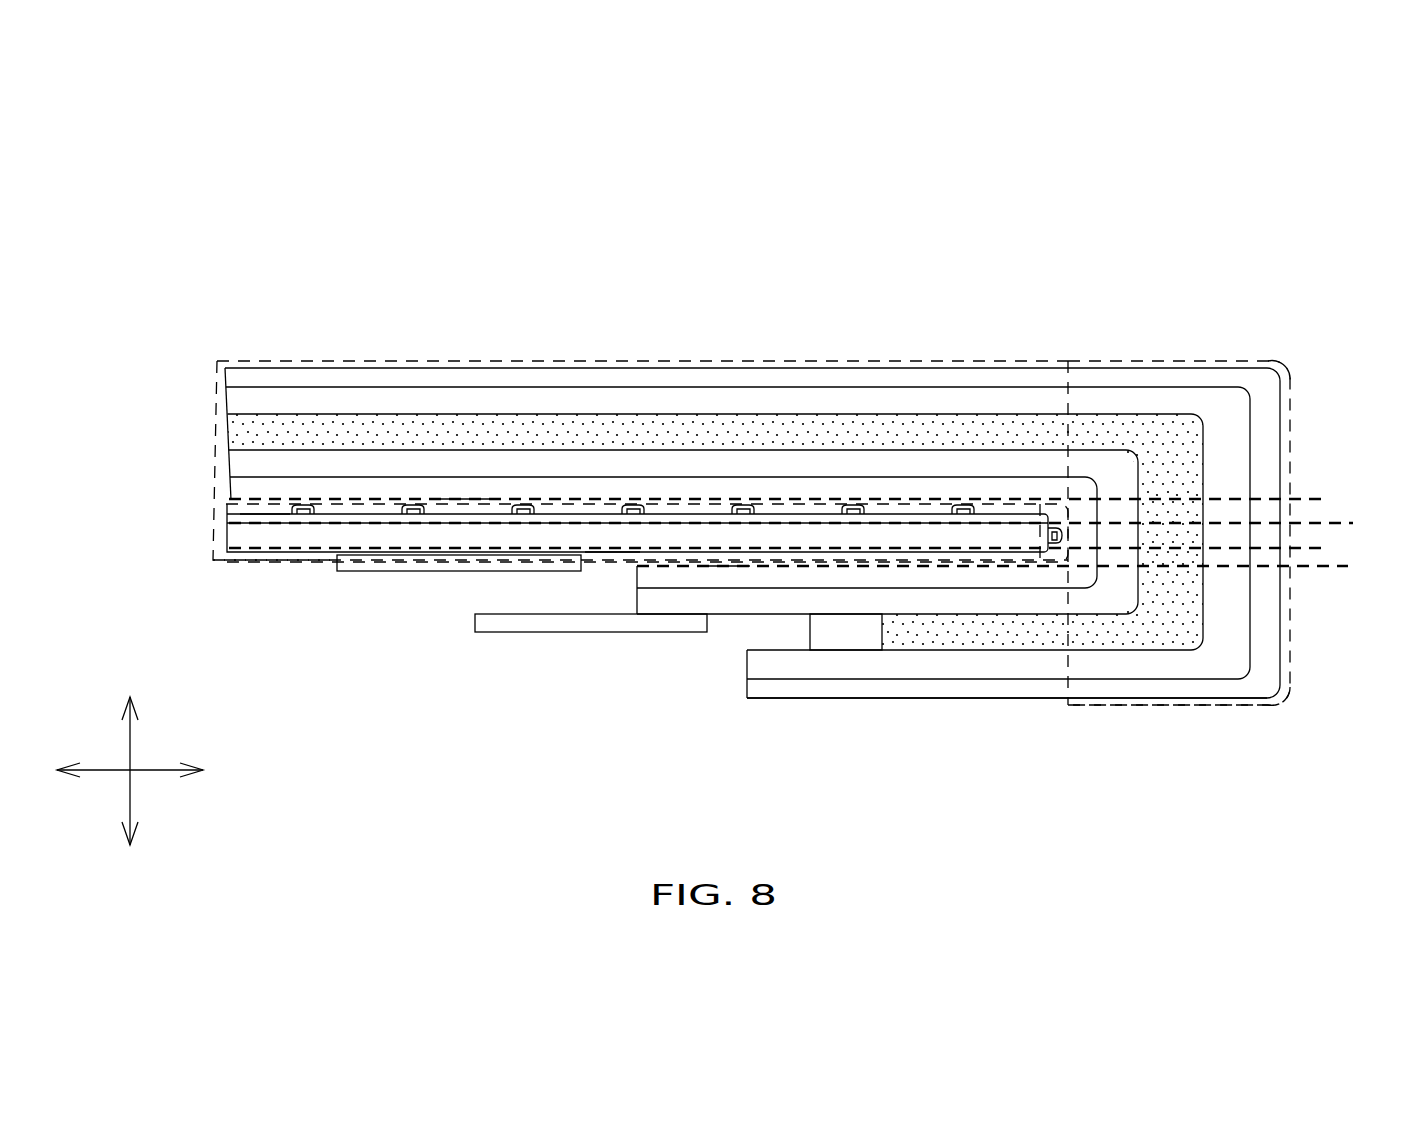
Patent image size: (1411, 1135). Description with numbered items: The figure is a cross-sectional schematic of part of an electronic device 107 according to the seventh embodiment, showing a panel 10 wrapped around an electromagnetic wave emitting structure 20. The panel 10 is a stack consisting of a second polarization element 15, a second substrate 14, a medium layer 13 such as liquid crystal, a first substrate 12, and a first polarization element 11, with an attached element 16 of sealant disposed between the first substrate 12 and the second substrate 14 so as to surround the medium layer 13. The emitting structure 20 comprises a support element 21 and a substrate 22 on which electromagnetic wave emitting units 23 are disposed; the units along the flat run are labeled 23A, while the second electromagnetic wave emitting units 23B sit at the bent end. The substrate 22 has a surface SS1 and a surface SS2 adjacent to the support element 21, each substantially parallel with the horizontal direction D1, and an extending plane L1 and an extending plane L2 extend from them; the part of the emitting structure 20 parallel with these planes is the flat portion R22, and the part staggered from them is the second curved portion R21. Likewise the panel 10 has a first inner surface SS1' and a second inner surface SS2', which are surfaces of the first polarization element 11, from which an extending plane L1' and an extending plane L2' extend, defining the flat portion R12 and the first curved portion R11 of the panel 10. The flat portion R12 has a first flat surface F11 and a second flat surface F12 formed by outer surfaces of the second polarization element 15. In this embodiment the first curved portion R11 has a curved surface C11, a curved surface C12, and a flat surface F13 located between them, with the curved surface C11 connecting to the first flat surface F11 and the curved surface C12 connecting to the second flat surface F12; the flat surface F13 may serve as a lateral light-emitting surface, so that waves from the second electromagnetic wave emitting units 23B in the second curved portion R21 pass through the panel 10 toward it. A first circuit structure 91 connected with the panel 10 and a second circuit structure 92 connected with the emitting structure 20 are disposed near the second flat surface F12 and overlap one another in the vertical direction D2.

The electronic device 107 is at (1222, 195).
The panel 10 is at (686, 521).
The second polarization element 15 is at (243, 375).
The second substrate 14 is at (243, 405).
The medium layer 13 is at (248, 433).
The first substrate 12 is at (248, 467).
The first polarization element 11 is at (625, 537).
The attached element 16 is at (857, 648).
The electromagnetic wave emitting structure 20 is at (717, 466).
The support element 21 is at (246, 545).
The substrate 22 is at (230, 521).
The electromagnetic wave emitting units 23 is at (749, 466).
The first sensing elements 23A is at (292, 506).
The second electromagnetic wave emitting units 23B is at (1063, 535).
The first circuit structure 91 is at (508, 633).
The second circuit structure 92 is at (374, 572).
The first flat surface F11 is at (290, 368).
The second flat surface F12 is at (855, 698).
The flat surface F13 is at (1283, 440).
The first curved portion R11 is at (1222, 707).
The flat portion R12 is at (1048, 361).
The second curved portion R21 is at (1059, 565).
The flat portion R22 is at (285, 561).
The curved surface C11 is at (1278, 362).
The curved surface C12 is at (1276, 699).
The extending plane L1 is at (804, 523).
The extending plane L1' is at (794, 493).
The extending plane L2 is at (793, 547).
The extending plane L2' is at (1011, 573).
The surface SS1 is at (296, 414).
The first inner surface SS1' is at (470, 372).
The surface SS2 is at (611, 613).
The second inner surface SS2' is at (721, 620).
The horizontal direction D1 is at (149, 773).
The vertical direction D2 is at (128, 754).